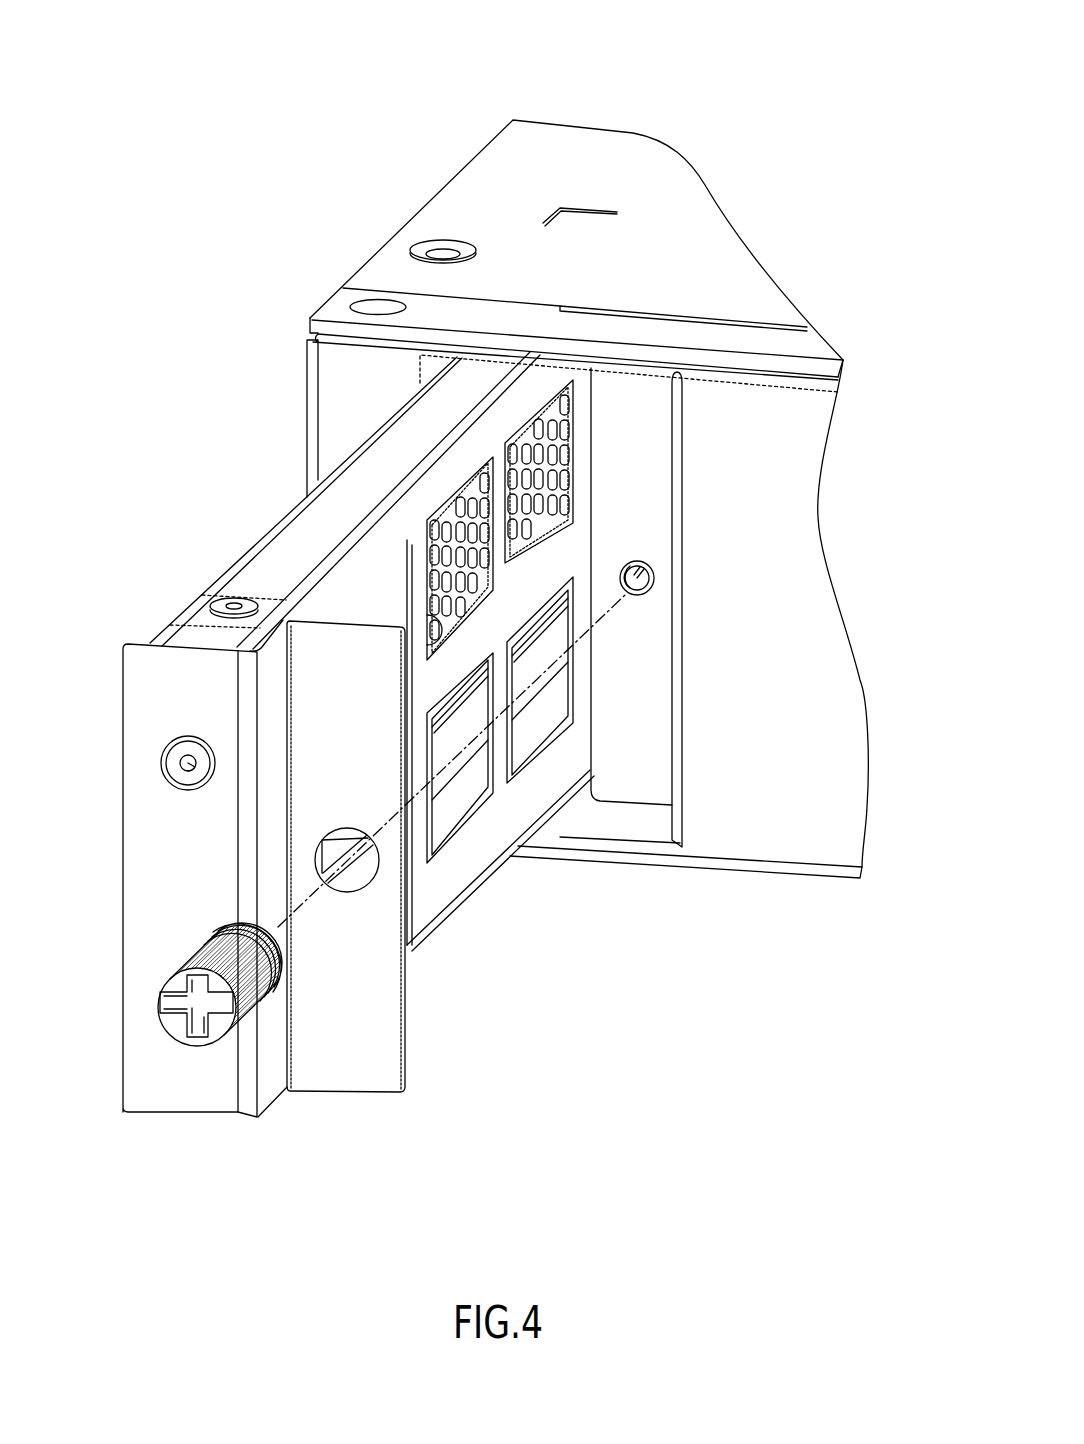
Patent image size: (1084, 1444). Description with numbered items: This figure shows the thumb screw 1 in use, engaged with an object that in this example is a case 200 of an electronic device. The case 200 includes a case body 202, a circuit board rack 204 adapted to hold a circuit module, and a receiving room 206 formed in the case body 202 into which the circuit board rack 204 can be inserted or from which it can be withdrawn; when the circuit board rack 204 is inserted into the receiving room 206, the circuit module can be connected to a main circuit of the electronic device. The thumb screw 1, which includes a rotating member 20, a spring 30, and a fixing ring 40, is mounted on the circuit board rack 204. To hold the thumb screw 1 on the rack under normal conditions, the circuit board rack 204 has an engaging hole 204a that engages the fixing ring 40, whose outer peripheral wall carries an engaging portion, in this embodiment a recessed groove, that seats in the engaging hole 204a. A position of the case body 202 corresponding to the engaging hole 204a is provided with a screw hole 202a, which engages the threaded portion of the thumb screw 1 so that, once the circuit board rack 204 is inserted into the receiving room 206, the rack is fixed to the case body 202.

The case 200 is at (283, 142).
The case body 202 is at (782, 812).
The screw hole 202a is at (653, 578).
The circuit board rack 204 is at (365, 1045).
The engaging hole 204a is at (363, 868).
The receiving room 206 is at (433, 365).
The thumb screw 1 is at (153, 1040).
The rotating member 20 is at (217, 1028).
The spring 30 is at (200, 934).
The fixing ring 40 is at (228, 922).